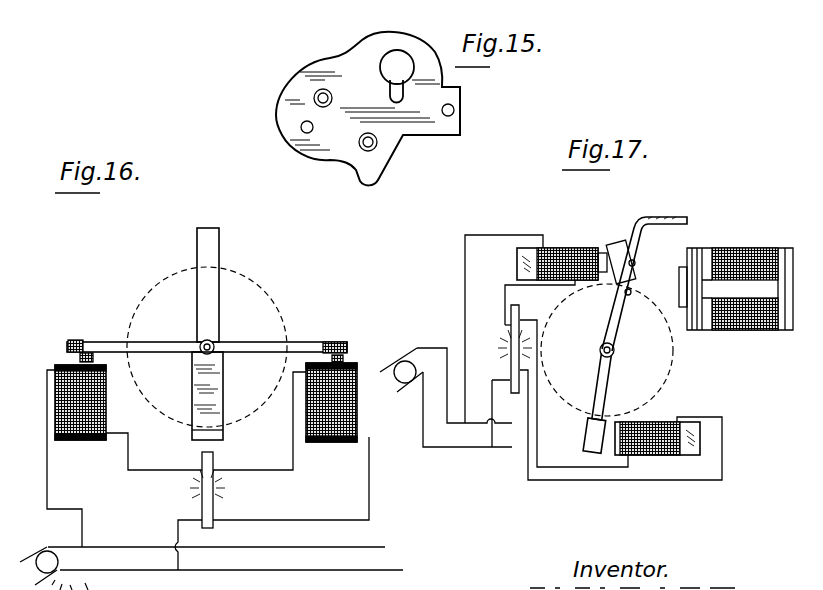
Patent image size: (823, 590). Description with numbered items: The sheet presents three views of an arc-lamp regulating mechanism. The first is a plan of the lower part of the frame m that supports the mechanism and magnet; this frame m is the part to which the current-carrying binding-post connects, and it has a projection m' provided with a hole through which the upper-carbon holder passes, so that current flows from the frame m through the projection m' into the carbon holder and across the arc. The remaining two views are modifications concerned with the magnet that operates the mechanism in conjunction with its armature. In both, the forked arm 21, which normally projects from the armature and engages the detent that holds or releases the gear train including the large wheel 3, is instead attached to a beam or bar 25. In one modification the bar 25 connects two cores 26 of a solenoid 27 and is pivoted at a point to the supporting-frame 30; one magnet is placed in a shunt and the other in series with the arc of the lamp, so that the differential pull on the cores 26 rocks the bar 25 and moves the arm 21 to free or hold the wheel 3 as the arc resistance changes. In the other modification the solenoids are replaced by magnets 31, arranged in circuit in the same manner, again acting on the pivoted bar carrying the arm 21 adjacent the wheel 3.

In FIG. 15, the frame m is at (377, 119).
In FIG. 15, the projection m' is at (396, 68).
In FIG. 16, the wheel 3 is at (207, 347).
In FIG. 17, the wheel 3 is at (607, 368).
In FIG. 16, the arm 21 is at (208, 285).
In FIG. 17, the arm 21 is at (644, 284).
In FIG. 16, the beam or bar 25 is at (207, 339).
In FIG. 16, the cores 26 is at (77, 355).
In FIG. 16, the solenoid 27 is at (365, 393).
In FIG. 17, the solenoid 27 is at (394, 375).
In FIG. 16, the supporting-frame 30 is at (220, 380).
In FIG. 17, the magnets 31 is at (573, 247).